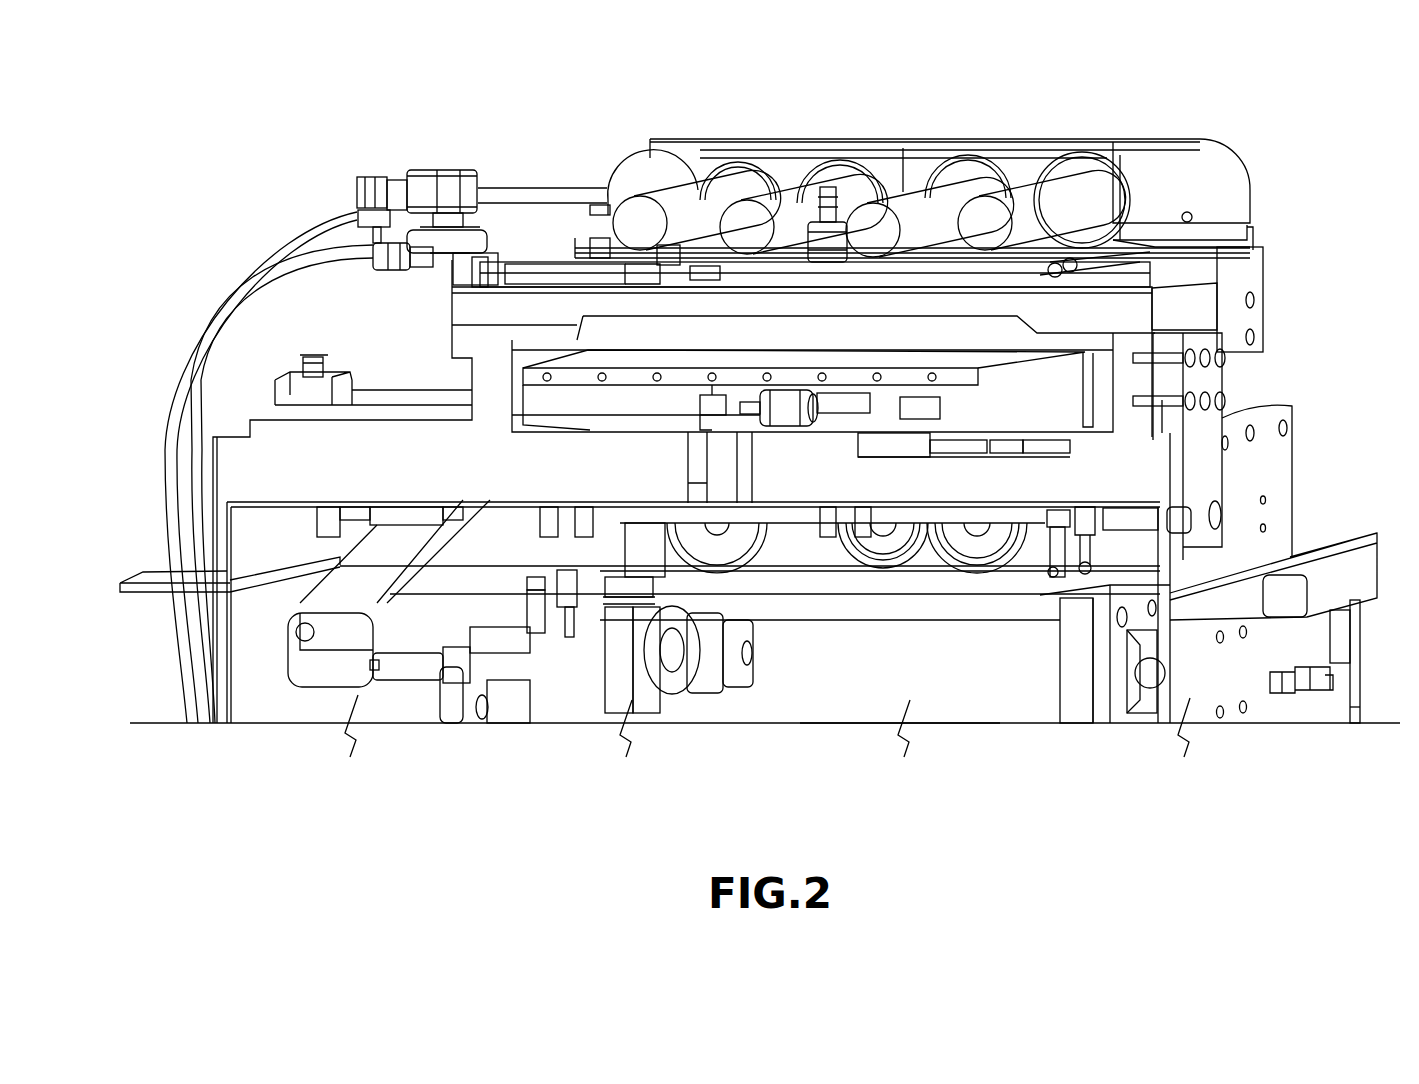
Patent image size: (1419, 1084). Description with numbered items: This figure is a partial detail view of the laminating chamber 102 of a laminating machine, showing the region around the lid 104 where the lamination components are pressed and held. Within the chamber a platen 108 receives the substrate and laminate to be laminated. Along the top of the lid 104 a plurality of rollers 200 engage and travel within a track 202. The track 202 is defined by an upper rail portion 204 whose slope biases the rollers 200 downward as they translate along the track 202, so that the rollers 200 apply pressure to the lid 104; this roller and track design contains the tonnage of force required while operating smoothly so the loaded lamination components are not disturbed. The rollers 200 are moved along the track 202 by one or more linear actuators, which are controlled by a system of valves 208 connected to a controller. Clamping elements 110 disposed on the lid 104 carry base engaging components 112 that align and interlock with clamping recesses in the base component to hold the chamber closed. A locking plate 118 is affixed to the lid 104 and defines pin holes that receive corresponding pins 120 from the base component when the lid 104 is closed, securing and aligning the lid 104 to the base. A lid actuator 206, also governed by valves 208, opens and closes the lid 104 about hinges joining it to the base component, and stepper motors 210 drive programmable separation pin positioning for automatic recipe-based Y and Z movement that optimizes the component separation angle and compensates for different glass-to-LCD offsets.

The laminating chamber 102 is at (226, 128).
The lid 104 is at (1192, 300).
The platen 108 is at (627, 375).
The clamping elements 110 is at (635, 160).
The base engaging components 112 is at (965, 547).
The locking plate 118 is at (1208, 425).
The pins 120 is at (1140, 517).
The rollers 200 is at (1072, 200).
The track 202 is at (1192, 178).
The upper rail portion 204 is at (1018, 148).
The lid actuator 206 is at (936, 681).
The valves 208 is at (430, 190).
The stepper motors 210 is at (795, 410).